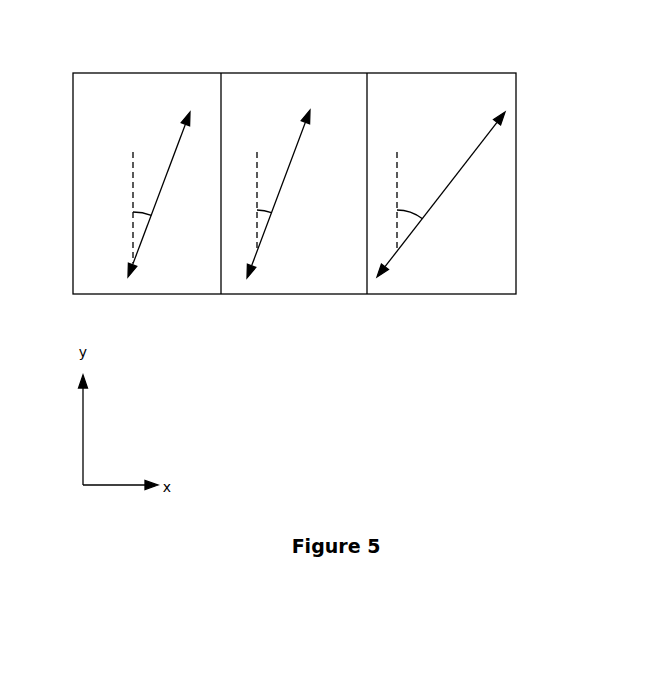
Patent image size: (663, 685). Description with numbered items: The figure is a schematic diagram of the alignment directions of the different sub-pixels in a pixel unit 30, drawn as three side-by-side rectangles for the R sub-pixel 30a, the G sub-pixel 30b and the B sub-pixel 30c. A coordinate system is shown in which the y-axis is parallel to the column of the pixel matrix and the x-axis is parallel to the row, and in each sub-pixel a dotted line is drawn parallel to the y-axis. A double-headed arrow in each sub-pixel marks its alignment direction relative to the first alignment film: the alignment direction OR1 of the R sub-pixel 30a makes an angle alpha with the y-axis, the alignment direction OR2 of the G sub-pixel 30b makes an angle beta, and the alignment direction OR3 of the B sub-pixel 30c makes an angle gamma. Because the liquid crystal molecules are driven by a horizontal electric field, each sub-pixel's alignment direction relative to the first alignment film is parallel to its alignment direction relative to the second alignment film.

The pixel unit 30 is at (288, 337).
The R sub-pixel 30a is at (133, 107).
The G sub-pixel 30b is at (283, 98).
The B sub-pixel 30c is at (445, 98).
The alignment direction of the R sub-pixel OR1 is at (189, 108).
The alignment direction of the G sub-pixel OR2 is at (311, 108).
The alignment direction of the B sub-pixel OR3 is at (504, 109).